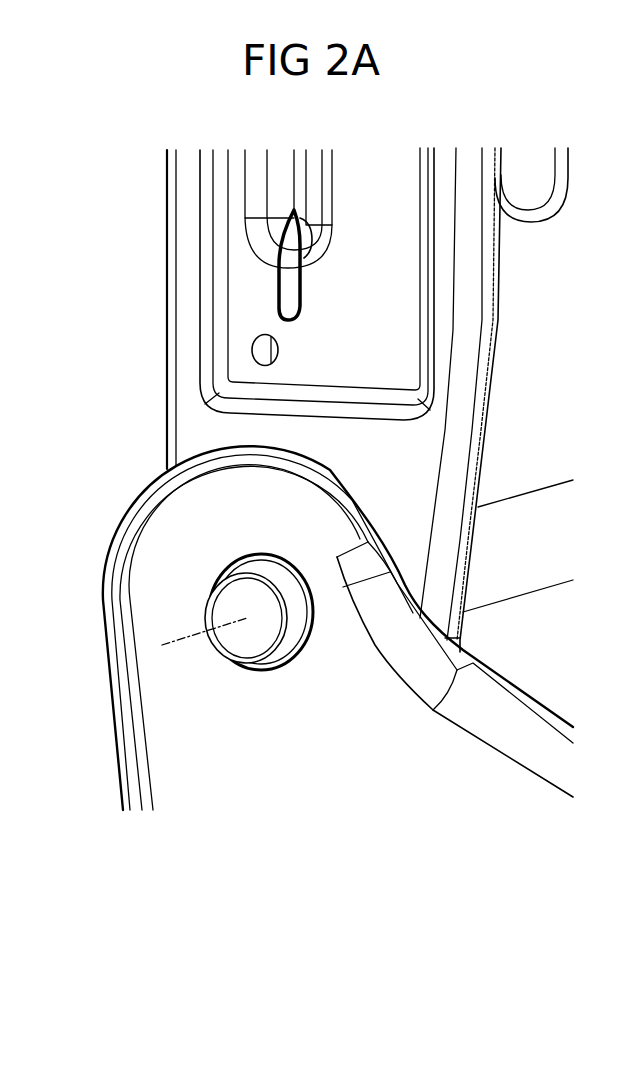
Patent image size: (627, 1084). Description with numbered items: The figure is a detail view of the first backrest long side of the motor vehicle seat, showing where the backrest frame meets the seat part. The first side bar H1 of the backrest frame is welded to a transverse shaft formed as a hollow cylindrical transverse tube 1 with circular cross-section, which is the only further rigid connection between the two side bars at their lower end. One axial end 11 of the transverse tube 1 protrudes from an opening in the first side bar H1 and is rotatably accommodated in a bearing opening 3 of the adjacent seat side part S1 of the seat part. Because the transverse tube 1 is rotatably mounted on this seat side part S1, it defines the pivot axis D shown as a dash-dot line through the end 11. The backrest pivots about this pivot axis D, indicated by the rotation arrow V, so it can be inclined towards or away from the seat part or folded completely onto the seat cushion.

The transverse tube 1 is at (532, 503).
The bearing opening 3 is at (241, 644).
The axial end 11 is at (232, 603).
The first side bar H1 is at (185, 285).
The seat side part S1 is at (185, 748).
The pivot axis D is at (183, 638).
The rotation direction V is at (300, 551).